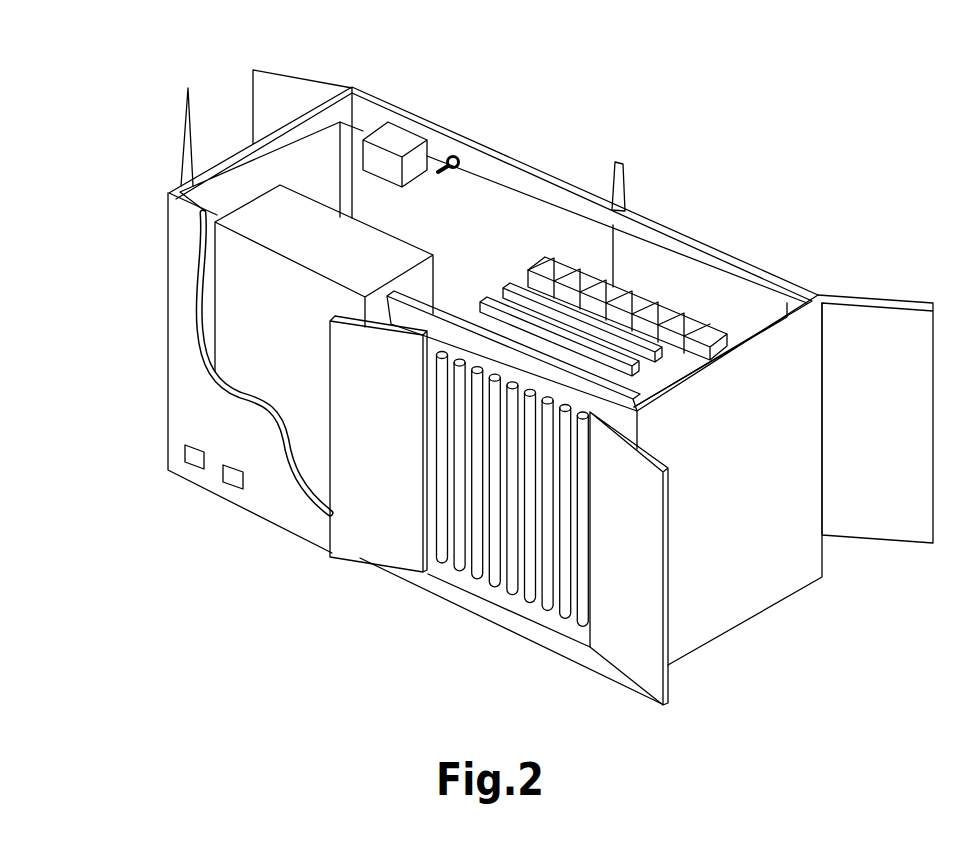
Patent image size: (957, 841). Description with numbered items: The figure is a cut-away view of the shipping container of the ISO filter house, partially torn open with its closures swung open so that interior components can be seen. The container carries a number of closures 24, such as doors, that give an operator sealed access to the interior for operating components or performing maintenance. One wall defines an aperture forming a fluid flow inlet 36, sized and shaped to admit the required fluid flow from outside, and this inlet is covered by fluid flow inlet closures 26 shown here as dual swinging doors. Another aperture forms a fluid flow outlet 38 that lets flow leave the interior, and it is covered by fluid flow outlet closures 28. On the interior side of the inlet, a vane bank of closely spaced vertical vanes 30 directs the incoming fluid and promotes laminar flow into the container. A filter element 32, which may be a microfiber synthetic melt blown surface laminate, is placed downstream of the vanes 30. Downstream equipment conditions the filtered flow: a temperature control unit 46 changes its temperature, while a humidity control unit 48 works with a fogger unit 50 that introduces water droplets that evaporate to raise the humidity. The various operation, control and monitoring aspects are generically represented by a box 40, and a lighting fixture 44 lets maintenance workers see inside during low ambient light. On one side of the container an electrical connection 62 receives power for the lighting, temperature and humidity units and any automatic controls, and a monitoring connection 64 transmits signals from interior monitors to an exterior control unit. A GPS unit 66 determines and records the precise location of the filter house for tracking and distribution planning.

The closure 24 is at (288, 100).
The fluid flow inlet closure 26 is at (366, 548).
The fluid flow outlet closure 28 is at (623, 166).
The vane 30 is at (463, 573).
The filter element 32 is at (638, 306).
The fluid flow inlet 36 is at (553, 615).
The fluid flow outlet 38 is at (703, 286).
The box 40 is at (232, 266).
The lighting fixture 44 is at (445, 153).
The temperature control unit 46 is at (462, 312).
The humidity control unit 48 is at (490, 298).
The fogger unit 50 is at (506, 284).
The electrical connection 62 is at (190, 460).
The monitoring connection 64 is at (229, 478).
The GPS unit 66 is at (400, 138).